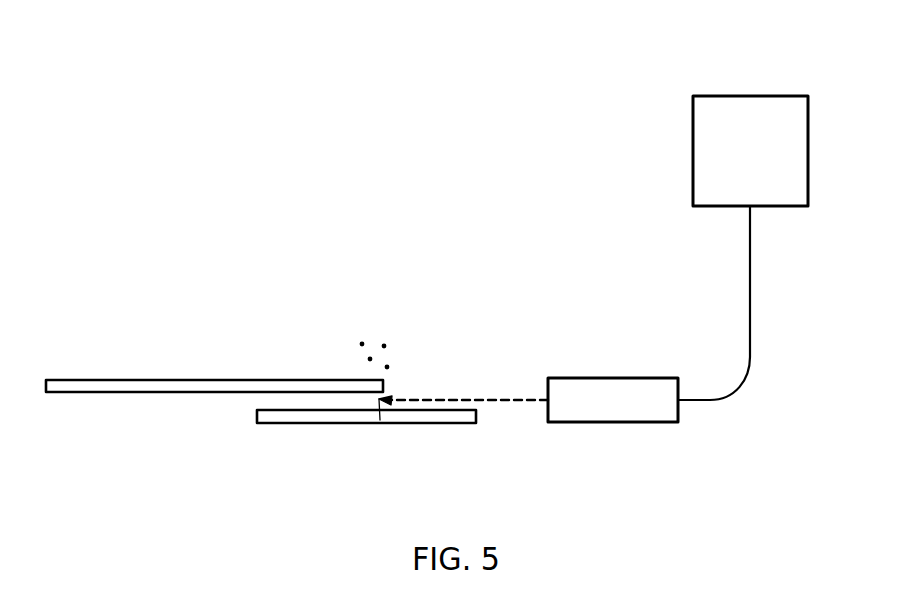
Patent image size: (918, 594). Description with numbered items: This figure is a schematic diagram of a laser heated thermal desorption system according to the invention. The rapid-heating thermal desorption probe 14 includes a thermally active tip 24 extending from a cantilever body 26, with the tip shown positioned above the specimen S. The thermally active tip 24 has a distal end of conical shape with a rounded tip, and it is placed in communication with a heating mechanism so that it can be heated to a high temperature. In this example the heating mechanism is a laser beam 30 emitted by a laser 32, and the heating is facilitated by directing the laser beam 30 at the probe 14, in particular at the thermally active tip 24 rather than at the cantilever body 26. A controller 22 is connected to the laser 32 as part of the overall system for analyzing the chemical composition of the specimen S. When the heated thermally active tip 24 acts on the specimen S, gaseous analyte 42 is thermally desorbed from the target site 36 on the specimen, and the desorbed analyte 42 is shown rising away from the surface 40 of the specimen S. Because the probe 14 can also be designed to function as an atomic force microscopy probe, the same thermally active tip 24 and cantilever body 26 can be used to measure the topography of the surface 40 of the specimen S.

The rapid-heating thermal desorption probe 14 is at (236, 308).
The controller 22 is at (743, 248).
The thermally active tip 24 is at (367, 393).
The cantilever body 26 is at (130, 380).
The laser beam 30 is at (487, 399).
The laser 32 is at (613, 400).
The target site 36 is at (382, 434).
The surface 40 is at (299, 393).
The gaseous analyte 42 is at (394, 345).
The specimen S is at (453, 424).